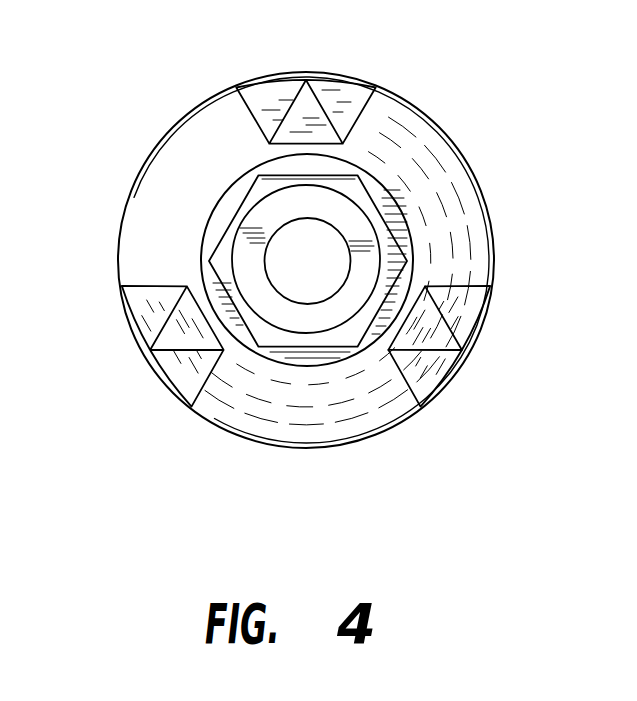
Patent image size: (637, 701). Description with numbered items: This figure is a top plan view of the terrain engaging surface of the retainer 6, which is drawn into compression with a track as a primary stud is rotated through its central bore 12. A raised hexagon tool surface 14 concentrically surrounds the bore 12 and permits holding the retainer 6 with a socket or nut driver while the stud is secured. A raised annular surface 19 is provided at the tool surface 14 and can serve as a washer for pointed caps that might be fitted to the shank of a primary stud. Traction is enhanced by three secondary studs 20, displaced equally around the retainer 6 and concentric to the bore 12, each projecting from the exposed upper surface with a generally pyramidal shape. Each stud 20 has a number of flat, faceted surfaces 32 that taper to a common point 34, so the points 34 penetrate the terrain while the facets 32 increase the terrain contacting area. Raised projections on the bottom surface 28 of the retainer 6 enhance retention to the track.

The retainer 6 is at (476, 168).
The bore 12 is at (310, 218).
The hexagon tool surface 14 is at (222, 238).
The raised annular surface 19 is at (268, 207).
The secondary studs 20 is at (307, 78).
The bottom surface 28 is at (307, 440).
The faceted surfaces 32 is at (456, 300).
The common point 34 is at (455, 350).